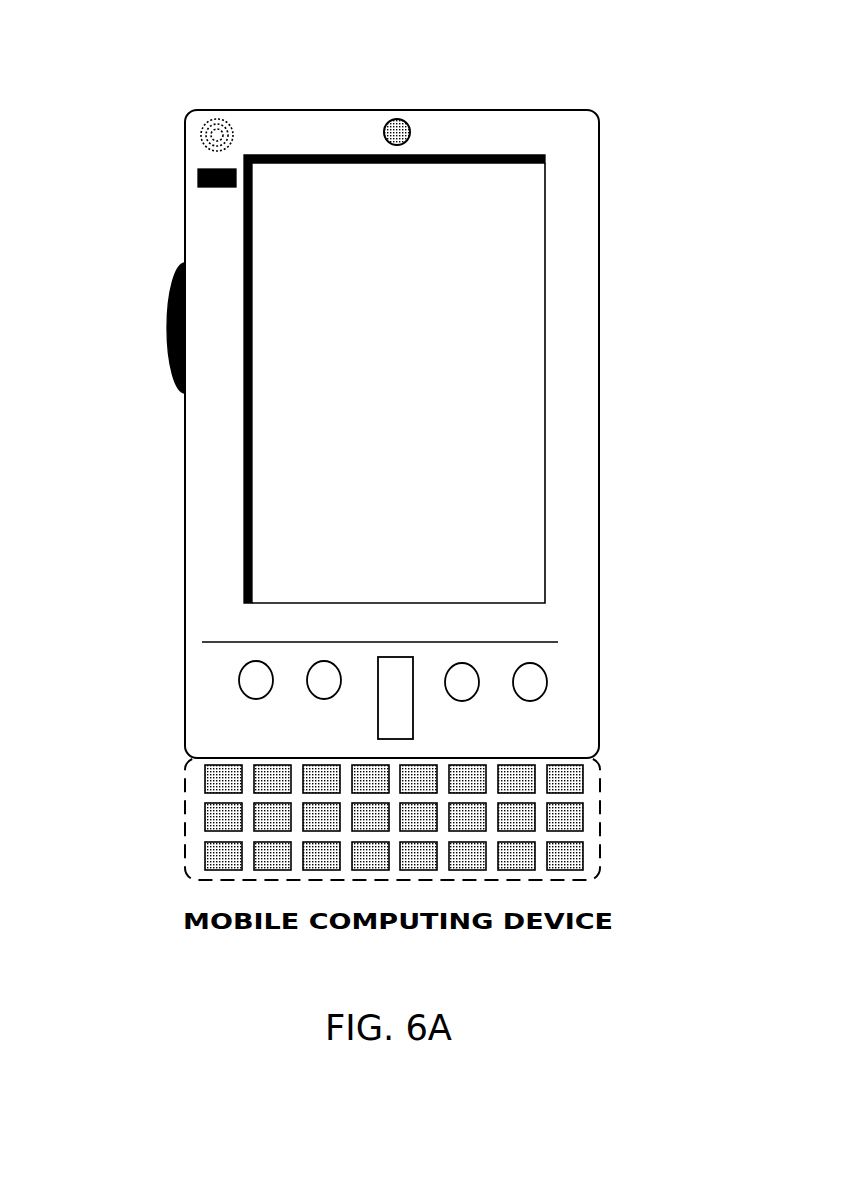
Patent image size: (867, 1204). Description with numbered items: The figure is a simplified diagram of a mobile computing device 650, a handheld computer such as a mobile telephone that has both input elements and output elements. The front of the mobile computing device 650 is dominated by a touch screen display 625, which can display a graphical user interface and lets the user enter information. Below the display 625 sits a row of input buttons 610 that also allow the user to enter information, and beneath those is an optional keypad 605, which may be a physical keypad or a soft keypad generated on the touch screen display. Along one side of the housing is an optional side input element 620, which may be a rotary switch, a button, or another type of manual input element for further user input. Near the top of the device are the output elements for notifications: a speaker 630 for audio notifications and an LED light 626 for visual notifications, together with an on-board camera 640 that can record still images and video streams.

The keypad 605 is at (185, 848).
The input buttons 610 is at (532, 693).
The side input element 620 is at (163, 337).
The touch screen display 625 is at (270, 541).
The LED light 626 is at (198, 170).
The speaker 630 is at (200, 126).
The on-board camera 640 is at (405, 121).
The mobile computing device 650 is at (599, 128).